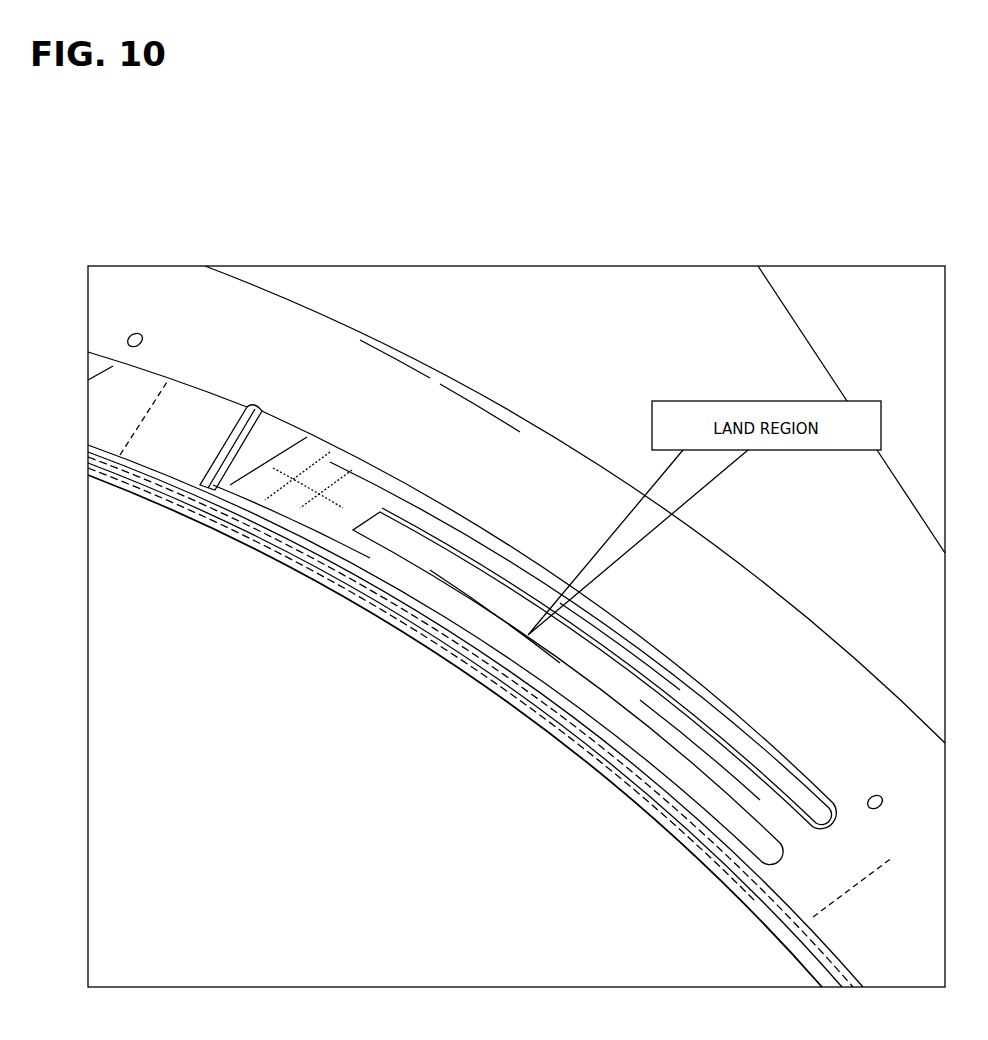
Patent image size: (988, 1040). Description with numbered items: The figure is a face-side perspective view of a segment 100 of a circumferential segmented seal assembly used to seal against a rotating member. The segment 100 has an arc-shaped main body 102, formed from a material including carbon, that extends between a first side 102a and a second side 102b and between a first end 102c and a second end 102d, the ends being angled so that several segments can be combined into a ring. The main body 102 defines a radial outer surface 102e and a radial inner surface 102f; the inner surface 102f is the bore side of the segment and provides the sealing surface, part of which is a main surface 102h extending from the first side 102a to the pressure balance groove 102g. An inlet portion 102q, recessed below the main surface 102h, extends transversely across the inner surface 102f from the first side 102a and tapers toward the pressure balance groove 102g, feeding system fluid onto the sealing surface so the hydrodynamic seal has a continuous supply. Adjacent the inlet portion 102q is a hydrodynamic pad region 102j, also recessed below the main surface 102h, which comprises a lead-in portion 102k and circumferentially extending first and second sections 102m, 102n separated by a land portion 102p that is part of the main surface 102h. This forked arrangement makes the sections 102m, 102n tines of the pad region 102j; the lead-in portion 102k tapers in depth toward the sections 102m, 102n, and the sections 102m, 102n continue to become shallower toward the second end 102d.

The segment 100 is at (100, 303).
The main body 102 is at (272, 313).
The first side 102a is at (393, 356).
The second side 102b is at (188, 512).
The first end 102c is at (152, 412).
The second end 102d is at (862, 887).
The radial outer surface 102e is at (472, 394).
The radial inner surface 102f is at (148, 452).
The pressure balance groove 102g is at (757, 903).
The main surface 102h is at (113, 468).
The hydrodynamic pad region 102j is at (307, 517).
The lead-in portion 102k is at (278, 468).
The first section 102m is at (503, 643).
The second section 102n is at (617, 657).
The land portion 102p is at (697, 750).
The inlet portion 102q is at (275, 412).